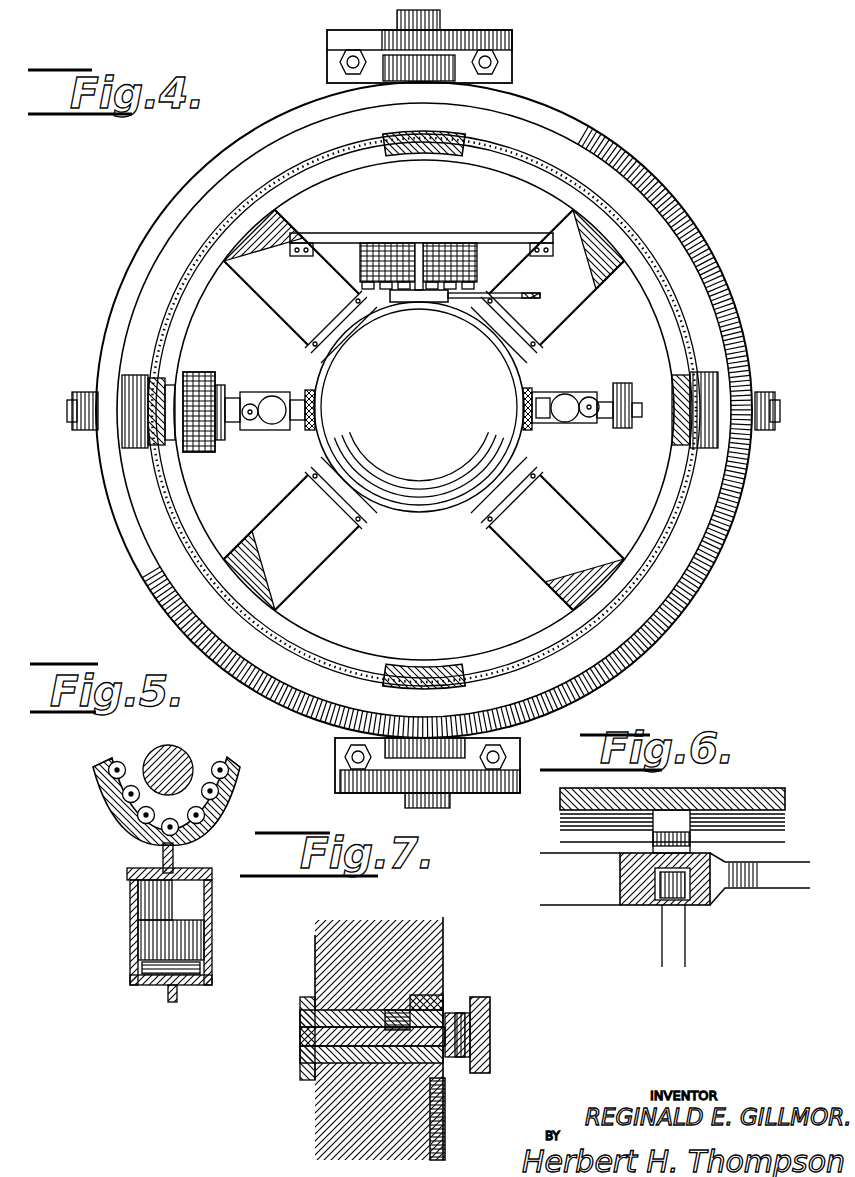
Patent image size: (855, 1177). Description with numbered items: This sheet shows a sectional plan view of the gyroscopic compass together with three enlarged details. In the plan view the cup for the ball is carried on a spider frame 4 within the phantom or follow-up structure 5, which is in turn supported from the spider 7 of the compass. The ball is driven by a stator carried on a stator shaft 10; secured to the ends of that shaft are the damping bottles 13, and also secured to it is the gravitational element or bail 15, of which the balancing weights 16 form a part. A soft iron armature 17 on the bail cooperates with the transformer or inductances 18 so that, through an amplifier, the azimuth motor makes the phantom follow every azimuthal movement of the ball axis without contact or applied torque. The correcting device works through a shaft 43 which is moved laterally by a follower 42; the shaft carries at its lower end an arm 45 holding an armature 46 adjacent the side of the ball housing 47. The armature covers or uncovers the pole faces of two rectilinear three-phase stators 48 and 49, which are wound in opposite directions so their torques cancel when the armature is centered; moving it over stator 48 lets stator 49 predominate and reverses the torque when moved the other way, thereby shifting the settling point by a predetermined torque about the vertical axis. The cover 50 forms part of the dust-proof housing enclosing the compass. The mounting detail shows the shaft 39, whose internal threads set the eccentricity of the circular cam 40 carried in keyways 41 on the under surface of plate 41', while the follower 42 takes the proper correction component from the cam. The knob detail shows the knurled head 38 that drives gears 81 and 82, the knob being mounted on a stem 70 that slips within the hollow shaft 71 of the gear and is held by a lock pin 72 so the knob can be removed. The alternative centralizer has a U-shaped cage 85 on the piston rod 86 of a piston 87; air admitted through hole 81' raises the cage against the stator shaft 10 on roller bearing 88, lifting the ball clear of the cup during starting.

In FIG. 4, the spider frame 4 is at (424, 410).
In FIG. 4, the phantom or follow-up structure 5 is at (424, 614).
In FIG. 7, the spider 7 is at (332, 956).
In FIG. 4, the stator shaft 10 is at (538, 398).
In FIG. 5, the stator shaft 10 is at (168, 747).
In FIG. 4, the damping bottles 13 is at (567, 396).
In FIG. 4, the gravitational element or bail 15 is at (543, 424).
In FIG. 4, the balancing weights 16 is at (599, 393).
In FIG. 4, the soft iron armature 17 is at (228, 390).
In FIG. 4, the transformer or inductances 18 is at (202, 374).
In FIG. 7, the knurled head 38 is at (486, 1000).
In FIG. 6, the shaft 39 is at (774, 896).
In FIG. 6, the circular cam 40 is at (620, 875).
In FIG. 6, the keyways 41 is at (662, 859).
In FIG. 6, the plate 41' is at (676, 783).
In FIG. 6, the follower 42 is at (658, 895).
In FIG. 4, the shaft 43 is at (538, 293).
In FIG. 6, the shaft 43 is at (680, 950).
In FIG. 4, the arm 45 is at (496, 300).
In FIG. 4, the armature 46 is at (420, 303).
In FIG. 4, the ball housing 47 is at (419, 407).
In FIG. 4, the rectilinear 3-phase A.C. stator 48 is at (378, 256).
In FIG. 4, the rectilinear 3-phase A.C. stator 49 is at (452, 256).
In FIG. 4, the cover 50 is at (370, 134).
In FIG. 7, the stem 70 is at (493, 1032).
In FIG. 7, the hollow shaft 71 is at (316, 1087).
In FIG. 7, the lock pin 72 is at (392, 1012).
In FIG. 7, the gear 81 is at (460, 999).
In FIG. 5, the hole 81' is at (132, 1010).
In FIG. 7, the gear 82 is at (441, 1110).
In FIG. 5, the U-shaped cage 85 is at (212, 806).
In FIG. 5, the piston rod 86 is at (178, 865).
In FIG. 5, the piston 87 is at (152, 937).
In FIG. 5, the roller bearing 88 is at (117, 760).